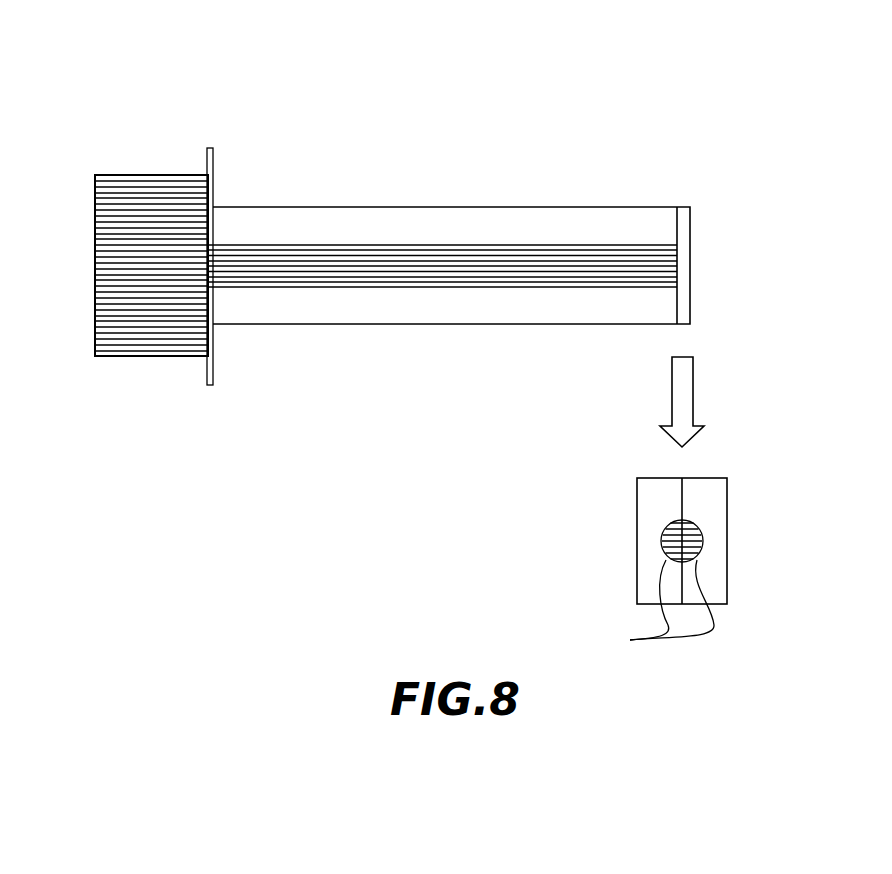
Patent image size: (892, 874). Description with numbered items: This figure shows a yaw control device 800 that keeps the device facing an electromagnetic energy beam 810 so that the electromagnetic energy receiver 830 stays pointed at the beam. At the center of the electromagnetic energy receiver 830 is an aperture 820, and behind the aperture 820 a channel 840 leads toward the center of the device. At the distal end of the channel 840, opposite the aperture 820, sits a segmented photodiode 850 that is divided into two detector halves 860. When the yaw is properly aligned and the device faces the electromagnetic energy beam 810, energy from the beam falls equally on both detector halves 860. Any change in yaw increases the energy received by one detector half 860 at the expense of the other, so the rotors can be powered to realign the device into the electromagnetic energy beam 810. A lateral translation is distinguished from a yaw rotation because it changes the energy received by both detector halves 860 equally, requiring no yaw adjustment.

The yaw control device 800 is at (648, 122).
The electromagnetic energy beam 810 is at (153, 176).
The aperture 820 is at (213, 262).
The electromagnetic energy receiver 830 is at (179, 331).
The channel 840 is at (441, 207).
The segmented photodiode 850 is at (692, 266).
The detector halves 860 is at (654, 585).